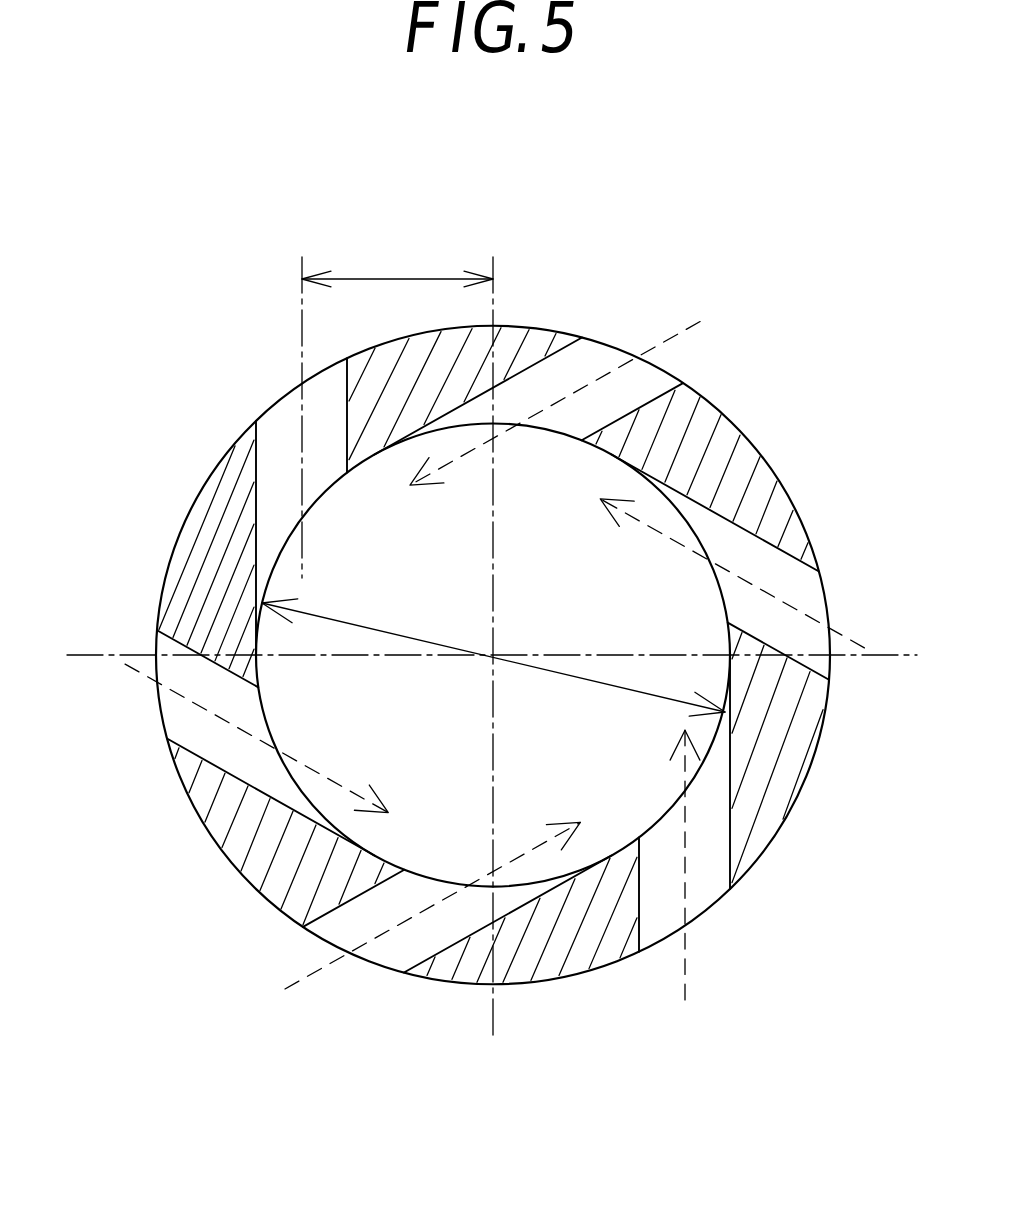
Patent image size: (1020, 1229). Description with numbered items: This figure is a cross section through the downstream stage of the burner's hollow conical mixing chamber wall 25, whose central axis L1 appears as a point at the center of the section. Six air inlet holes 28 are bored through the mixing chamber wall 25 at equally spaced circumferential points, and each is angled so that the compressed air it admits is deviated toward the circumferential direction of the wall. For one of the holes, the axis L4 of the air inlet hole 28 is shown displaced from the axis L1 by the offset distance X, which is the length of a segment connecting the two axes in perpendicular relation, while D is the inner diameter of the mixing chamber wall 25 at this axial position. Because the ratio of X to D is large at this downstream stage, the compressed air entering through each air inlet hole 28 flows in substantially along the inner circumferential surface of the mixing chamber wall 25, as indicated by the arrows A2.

The mixing chamber wall 25 is at (157, 563).
The air inlet hole 28 is at (283, 423).
The arrow A2 is at (489, 672).
The inner diameter D is at (493, 650).
The axis of the mixing chamber wall L1 is at (485, 668).
The axis of the air inlet hole L4 is at (300, 327).
The offset distance X is at (397, 253).